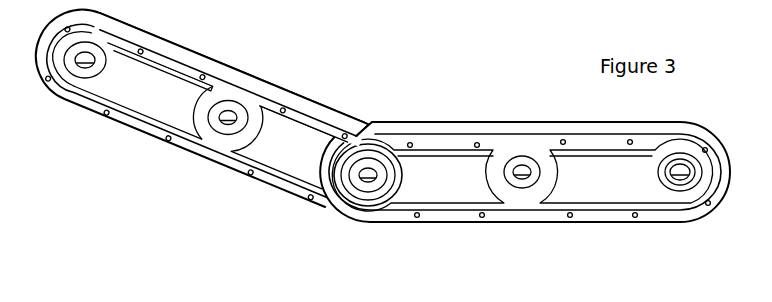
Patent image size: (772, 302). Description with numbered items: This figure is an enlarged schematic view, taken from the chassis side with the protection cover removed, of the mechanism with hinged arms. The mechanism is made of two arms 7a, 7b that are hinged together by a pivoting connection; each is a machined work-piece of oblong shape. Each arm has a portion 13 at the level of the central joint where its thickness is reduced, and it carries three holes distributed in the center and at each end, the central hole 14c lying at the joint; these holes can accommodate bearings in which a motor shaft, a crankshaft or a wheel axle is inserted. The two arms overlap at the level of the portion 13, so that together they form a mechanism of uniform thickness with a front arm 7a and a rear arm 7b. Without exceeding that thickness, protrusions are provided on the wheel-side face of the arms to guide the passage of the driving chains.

The front arm 7a is at (525, 165).
The rear arm 7b is at (195, 113).
The portion of reduced thickness 13 is at (377, 120).
The hole 14c is at (365, 183).